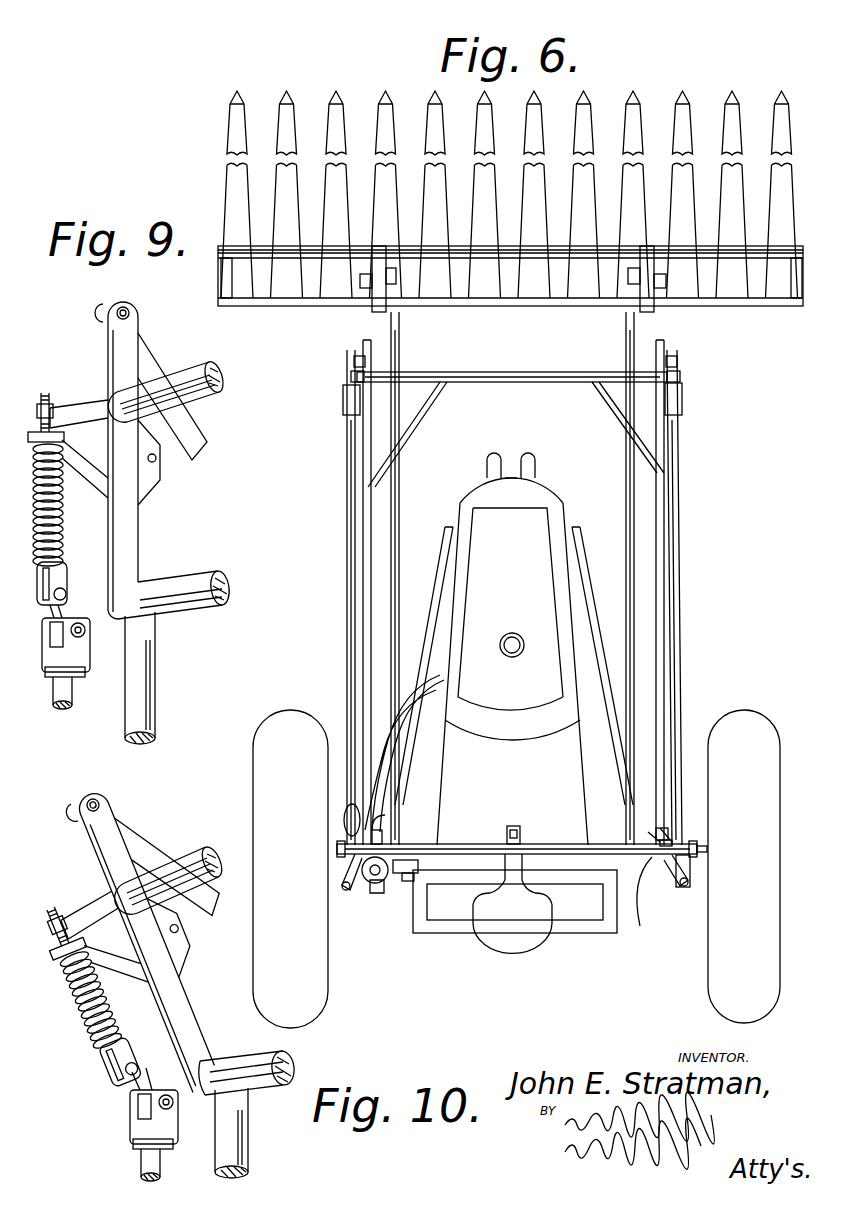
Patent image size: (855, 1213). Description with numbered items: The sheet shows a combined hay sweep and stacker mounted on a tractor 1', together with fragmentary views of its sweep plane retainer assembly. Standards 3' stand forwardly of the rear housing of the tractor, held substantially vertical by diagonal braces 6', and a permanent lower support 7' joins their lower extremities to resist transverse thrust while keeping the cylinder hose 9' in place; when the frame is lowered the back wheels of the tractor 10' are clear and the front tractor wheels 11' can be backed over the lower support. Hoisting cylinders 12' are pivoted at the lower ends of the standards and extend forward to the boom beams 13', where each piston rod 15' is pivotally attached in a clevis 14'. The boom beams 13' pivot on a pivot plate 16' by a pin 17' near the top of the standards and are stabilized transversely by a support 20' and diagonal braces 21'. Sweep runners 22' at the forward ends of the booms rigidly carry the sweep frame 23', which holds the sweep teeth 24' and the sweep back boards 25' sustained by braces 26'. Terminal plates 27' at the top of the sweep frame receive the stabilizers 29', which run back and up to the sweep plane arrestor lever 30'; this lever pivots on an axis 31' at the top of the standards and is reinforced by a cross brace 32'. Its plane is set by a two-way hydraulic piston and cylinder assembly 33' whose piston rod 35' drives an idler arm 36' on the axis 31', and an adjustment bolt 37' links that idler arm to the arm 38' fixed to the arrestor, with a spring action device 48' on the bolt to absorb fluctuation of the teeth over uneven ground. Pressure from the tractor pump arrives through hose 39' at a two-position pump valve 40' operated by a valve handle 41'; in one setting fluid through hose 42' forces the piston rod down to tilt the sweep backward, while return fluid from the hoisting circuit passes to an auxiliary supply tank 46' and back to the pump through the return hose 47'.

In FIG. 6, the tractor 1' is at (512, 649).
In FIG. 9, the standards 3' is at (157, 678).
In FIG. 10, the standards 3' is at (247, 1133).
In FIG. 6, the diagonal braces 6' is at (514, 666).
In FIG. 6, the lower support 7' is at (725, 855).
In FIG. 6, the cylinder hose 9' is at (516, 886).
In FIG. 6, the back wheels of the tractor 10' is at (516, 869).
In FIG. 6, the front tractor wheels 11' is at (511, 450).
In FIG. 6, the hoisting cylinders 12' is at (519, 597).
In FIG. 6, the boom beams 13' is at (513, 592).
In FIG. 6, the clevis 14' is at (517, 349).
In FIG. 6, the piston rod 15' is at (521, 374).
In FIG. 6, the pivot plate 16' is at (703, 800).
In FIG. 6, the pin 17' is at (561, 817).
In FIG. 6, the support 20' is at (512, 395).
In FIG. 6, the diagonal braces 21' is at (516, 434).
In FIG. 6, the sweep runners 22' is at (515, 301).
In FIG. 6, the sweep frame 23' is at (510, 290).
In FIG. 6, the sweep teeth 24' is at (489, 177).
In FIG. 6, the sweep back boards 25' is at (510, 292).
In FIG. 6, the braces 26' is at (487, 297).
In FIG. 6, the terminal plates 27' is at (513, 290).
In FIG. 6, the stabilizers 29' is at (512, 578).
In FIG. 9, the stabilizers 29' is at (195, 419).
In FIG. 10, the stabilizers 29' is at (178, 884).
In FIG. 6, the sweep plane arrestor lever 30' is at (640, 900).
In FIG. 9, the sweep plane arrestor lever 30' is at (143, 457).
In FIG. 10, the sweep plane arrestor lever 30' is at (150, 943).
In FIG. 6, the axis 31' is at (517, 835).
In FIG. 9, the axis 31' is at (169, 611).
In FIG. 10, the axis 31' is at (247, 1054).
In FIG. 6, the cross brace 32' is at (517, 831).
In FIG. 9, the cross brace 32' is at (167, 375).
In FIG. 10, the cross brace 32' is at (170, 862).
In FIG. 6, the hydraulic piston and cylinder assembly 33' is at (493, 905).
In FIG. 9, the piston rod 35' is at (47, 712).
In FIG. 10, the piston rod 35' is at (121, 1165).
In FIG. 9, the idler arm 36' is at (83, 648).
In FIG. 10, the idler arm 36' is at (173, 1121).
In FIG. 9, the adjustment bolt 37' is at (45, 401).
In FIG. 10, the adjustment bolt 37' is at (56, 902).
In FIG. 9, the arm 38' is at (79, 435).
In FIG. 10, the arm 38' is at (103, 940).
In FIG. 6, the hose 39' is at (484, 660).
In FIG. 6, the pump valve 40' is at (426, 870).
In FIG. 6, the valve handle 41' is at (433, 890).
In FIG. 6, the hose 42' is at (368, 900).
In FIG. 6, the auxiliary supply tank 46' is at (318, 813).
In FIG. 6, the return hose 47' is at (406, 753).
In FIG. 9, the spring action device 48' is at (67, 531).
In FIG. 10, the spring action device 48' is at (97, 1018).